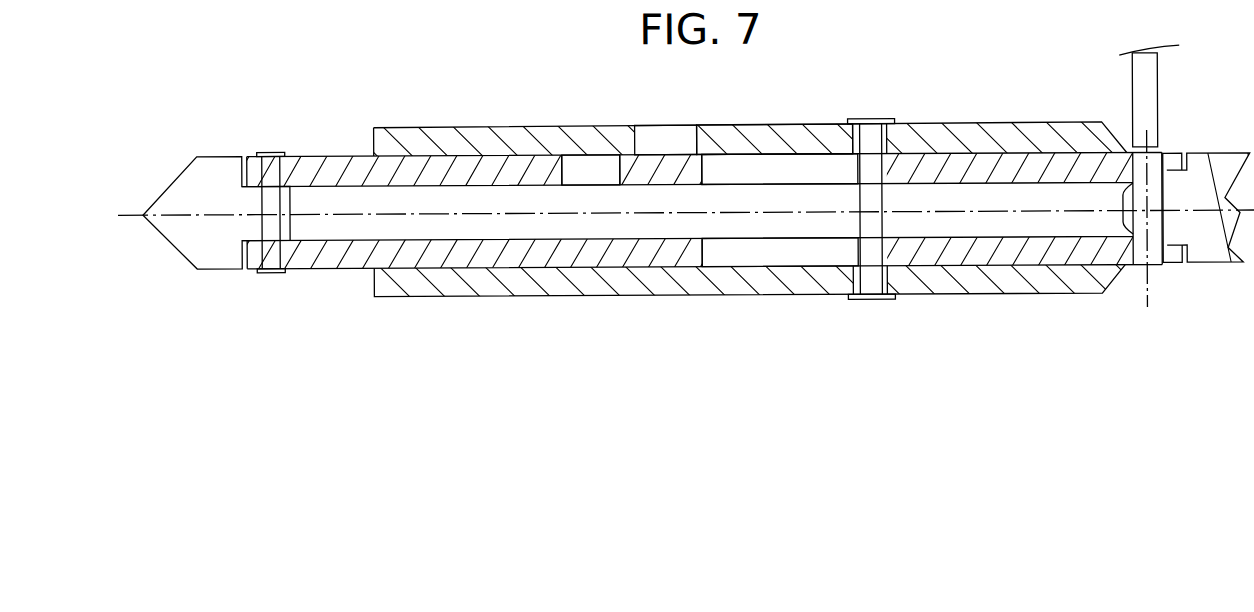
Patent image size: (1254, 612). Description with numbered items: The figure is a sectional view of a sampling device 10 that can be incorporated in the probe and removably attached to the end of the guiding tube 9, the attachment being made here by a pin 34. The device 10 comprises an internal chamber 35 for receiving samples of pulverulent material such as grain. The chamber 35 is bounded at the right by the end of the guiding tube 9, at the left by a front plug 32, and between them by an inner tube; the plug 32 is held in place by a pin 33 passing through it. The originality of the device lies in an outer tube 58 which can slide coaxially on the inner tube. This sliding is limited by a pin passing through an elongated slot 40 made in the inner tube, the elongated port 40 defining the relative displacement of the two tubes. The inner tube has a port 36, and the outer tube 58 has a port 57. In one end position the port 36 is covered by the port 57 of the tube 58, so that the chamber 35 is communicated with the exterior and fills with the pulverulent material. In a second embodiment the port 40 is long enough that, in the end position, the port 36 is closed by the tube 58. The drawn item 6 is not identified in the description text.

The sampling device 10 is at (440, 335).
The front plug 32 is at (172, 245).
The pin 33 is at (270, 272).
The internal chamber 35 is at (333, 156).
The port 36 is at (590, 164).
The port 57 is at (657, 133).
The elongated port 40 is at (742, 165).
The tube 58 is at (800, 132).
The pin 6 is at (868, 122).
The pin 34 is at (1152, 97).
The guiding tube 9 is at (1207, 265).